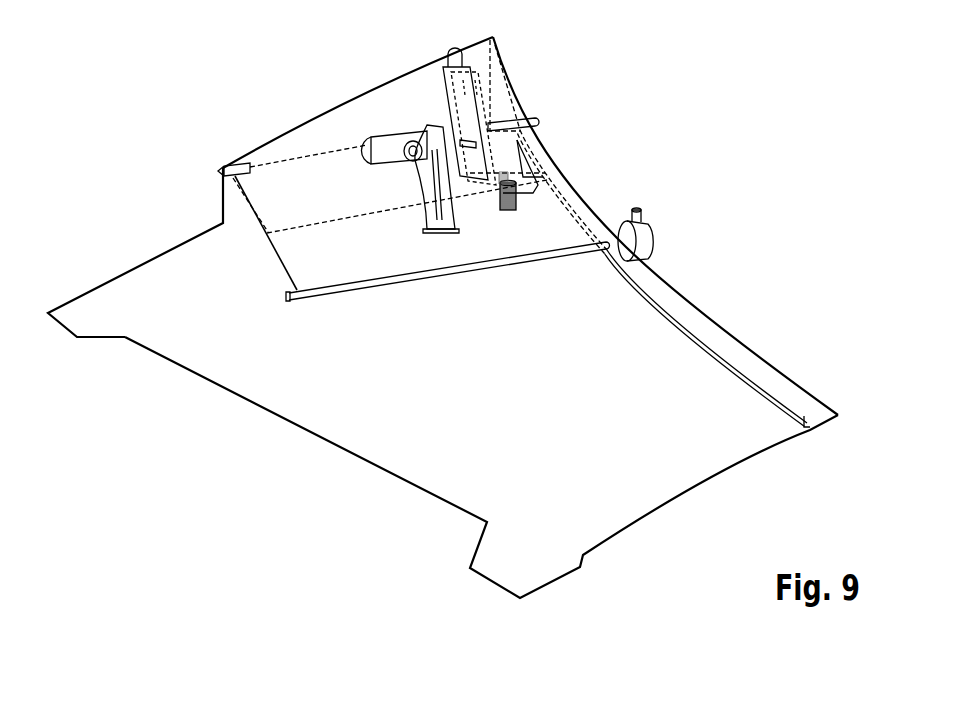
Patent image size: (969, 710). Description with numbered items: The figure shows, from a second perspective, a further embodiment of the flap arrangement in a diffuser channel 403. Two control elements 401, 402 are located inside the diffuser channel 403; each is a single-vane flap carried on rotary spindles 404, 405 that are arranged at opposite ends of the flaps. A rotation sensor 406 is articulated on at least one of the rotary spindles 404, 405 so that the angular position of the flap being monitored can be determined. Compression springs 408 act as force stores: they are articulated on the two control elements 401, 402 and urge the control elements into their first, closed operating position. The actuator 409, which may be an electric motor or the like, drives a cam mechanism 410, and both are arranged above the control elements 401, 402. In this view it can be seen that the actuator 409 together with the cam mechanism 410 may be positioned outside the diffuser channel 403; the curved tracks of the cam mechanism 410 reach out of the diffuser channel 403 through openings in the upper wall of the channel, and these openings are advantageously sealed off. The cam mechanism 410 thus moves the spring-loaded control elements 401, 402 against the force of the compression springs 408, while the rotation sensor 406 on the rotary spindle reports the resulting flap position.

The control element 401 is at (550, 220).
The control element 402 is at (512, 150).
The diffuser channel 403 is at (340, 416).
The rotary spindle 404 is at (287, 295).
The rotary spindle 405 is at (218, 170).
The rotation sensor 406 is at (645, 242).
The compression spring 408 is at (508, 176).
The actuator 409 is at (468, 97).
The cam mechanism 410 is at (410, 88).